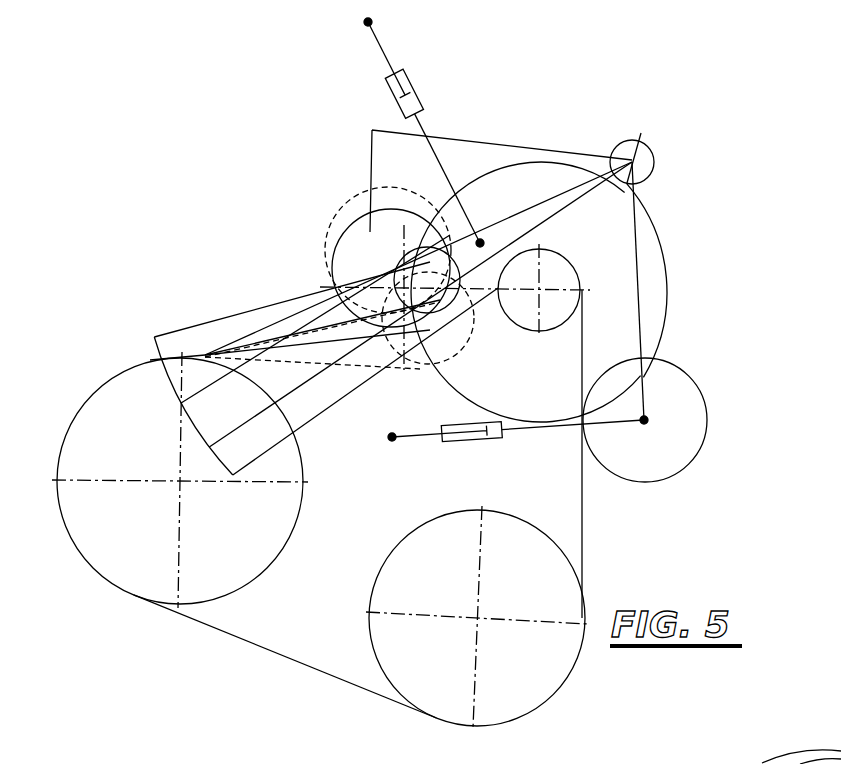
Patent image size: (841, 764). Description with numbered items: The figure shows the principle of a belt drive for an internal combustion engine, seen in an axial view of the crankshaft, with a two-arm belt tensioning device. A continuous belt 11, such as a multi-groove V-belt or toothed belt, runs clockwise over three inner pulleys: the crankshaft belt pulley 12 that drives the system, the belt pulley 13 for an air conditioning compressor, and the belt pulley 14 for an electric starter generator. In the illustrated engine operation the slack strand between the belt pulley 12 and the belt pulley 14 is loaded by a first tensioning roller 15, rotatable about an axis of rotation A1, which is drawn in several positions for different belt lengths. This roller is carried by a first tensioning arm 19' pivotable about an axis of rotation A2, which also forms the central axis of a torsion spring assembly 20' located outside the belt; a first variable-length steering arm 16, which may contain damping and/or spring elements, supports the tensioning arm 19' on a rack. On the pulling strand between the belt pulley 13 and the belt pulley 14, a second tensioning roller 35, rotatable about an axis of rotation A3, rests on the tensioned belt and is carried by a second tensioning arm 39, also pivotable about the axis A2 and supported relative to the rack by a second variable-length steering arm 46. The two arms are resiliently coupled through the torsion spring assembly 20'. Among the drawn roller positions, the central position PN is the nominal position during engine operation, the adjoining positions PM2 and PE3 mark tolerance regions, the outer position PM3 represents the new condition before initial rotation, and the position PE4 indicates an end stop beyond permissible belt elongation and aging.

The continuous belt 11 is at (257, 647).
The belt pulley 12 is at (108, 582).
The belt pulley 13 is at (398, 693).
The belt pulley 14 is at (520, 330).
The first tensioning roller 15 is at (368, 203).
The first variable-length steering arm 16 is at (423, 127).
The first tensioning arm 19' is at (505, 424).
The torsion spring assembly 20' is at (659, 255).
The second tensioning roller 35 is at (677, 367).
The second tensioning arm 39 is at (658, 268).
The second variable-length steering arm 46 is at (547, 430).
The axis of rotation A1 is at (402, 287).
The axis of rotation A2 is at (610, 142).
The axis of rotation A3 is at (644, 422).
The outer position PM3 is at (402, 272).
The adjoining position PM2 is at (402, 279).
The nominal position PN is at (405, 290).
The adjoining position PE3 is at (408, 318).
The end stop position PE4 is at (425, 332).